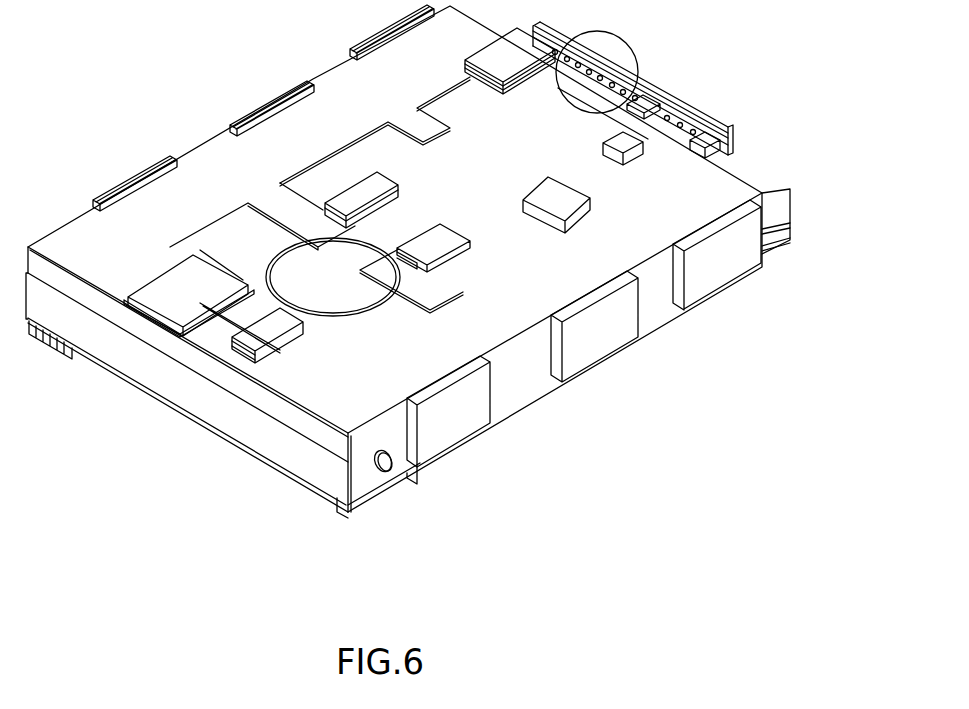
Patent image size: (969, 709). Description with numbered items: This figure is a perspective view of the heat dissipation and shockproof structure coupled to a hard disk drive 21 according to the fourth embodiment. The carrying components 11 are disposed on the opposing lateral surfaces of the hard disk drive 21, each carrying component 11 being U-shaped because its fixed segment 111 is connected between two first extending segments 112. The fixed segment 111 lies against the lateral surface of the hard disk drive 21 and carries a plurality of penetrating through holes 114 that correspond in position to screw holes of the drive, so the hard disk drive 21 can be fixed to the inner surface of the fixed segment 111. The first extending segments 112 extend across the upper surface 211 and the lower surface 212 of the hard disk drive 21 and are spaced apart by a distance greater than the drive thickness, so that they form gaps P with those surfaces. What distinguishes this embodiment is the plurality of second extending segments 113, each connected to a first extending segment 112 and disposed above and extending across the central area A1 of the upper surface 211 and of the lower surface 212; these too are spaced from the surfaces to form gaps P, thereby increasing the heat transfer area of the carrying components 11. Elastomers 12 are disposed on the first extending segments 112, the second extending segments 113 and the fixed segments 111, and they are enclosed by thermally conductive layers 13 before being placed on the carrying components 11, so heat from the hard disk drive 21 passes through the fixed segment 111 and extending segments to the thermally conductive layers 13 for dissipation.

The carrying component 11 is at (730, 190).
The fixed segment 111 is at (530, 382).
The first extending segment 112 is at (307, 392).
The second extending segment 113 is at (603, 152).
The penetrating through hole 114 is at (388, 472).
The elastomer 12 is at (133, 300).
The thermally conductive layer 13 is at (125, 297).
The hard disk drive 21 is at (182, 382).
The upper surface 211 is at (563, 90).
The lower surface 212 is at (123, 377).
The central area A1 is at (577, 107).
The gap P is at (230, 377).